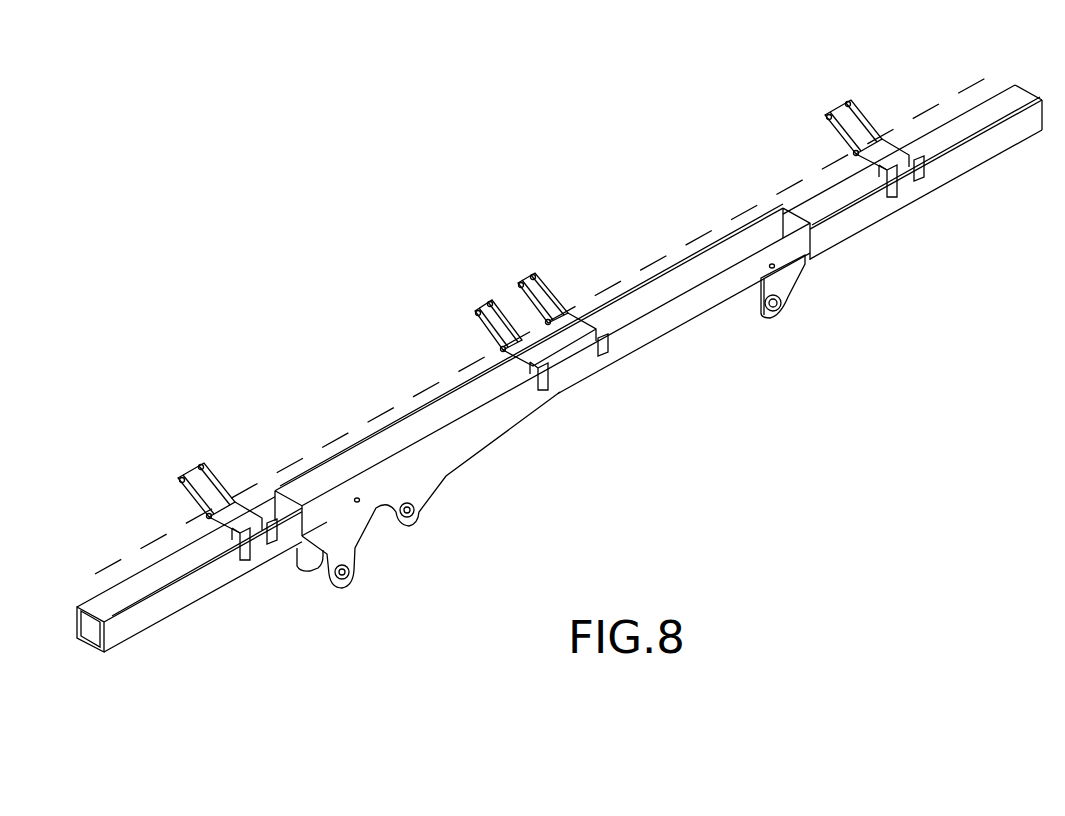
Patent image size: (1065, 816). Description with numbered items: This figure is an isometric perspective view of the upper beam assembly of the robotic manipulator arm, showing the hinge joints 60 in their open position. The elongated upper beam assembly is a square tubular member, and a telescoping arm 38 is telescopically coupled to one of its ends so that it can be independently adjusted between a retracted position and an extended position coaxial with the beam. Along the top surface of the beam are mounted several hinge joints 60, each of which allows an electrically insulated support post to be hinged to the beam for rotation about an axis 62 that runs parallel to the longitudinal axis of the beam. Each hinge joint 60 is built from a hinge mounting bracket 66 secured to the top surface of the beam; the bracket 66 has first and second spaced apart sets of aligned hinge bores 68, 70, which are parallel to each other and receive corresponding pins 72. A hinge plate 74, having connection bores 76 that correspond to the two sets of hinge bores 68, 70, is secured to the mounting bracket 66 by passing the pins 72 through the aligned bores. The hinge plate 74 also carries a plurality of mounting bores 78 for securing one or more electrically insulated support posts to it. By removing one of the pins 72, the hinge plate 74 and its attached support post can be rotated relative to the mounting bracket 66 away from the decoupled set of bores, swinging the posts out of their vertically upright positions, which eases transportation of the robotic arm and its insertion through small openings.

The telescoping arm 38 is at (993, 162).
The hinge joint 60 is at (237, 490).
The axis 62 is at (110, 568).
The hinge mounting bracket 66 is at (232, 533).
The first set of hinge bores 68 is at (207, 517).
The second set of hinge bores 70 is at (242, 529).
The pin 72 is at (270, 545).
The hinge plate 74 is at (212, 468).
The connection bore 76 is at (178, 477).
The mounting bore 78 is at (208, 496).